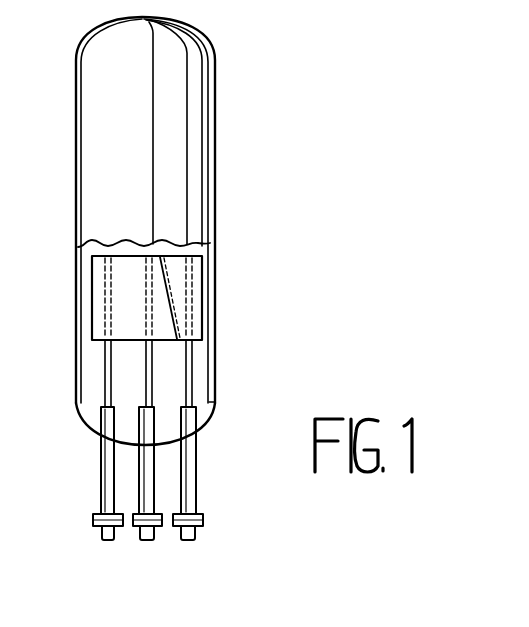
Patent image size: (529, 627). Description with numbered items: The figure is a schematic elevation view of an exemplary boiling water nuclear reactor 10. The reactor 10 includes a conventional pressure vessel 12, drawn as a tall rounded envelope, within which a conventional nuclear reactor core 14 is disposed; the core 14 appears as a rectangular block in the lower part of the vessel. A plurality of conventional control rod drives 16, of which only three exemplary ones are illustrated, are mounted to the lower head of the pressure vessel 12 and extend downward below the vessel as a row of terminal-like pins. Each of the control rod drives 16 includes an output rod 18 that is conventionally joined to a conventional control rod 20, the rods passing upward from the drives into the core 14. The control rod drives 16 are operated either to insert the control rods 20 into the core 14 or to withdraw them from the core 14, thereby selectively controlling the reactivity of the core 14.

The boiling water nuclear reactor 10 is at (216, 112).
The pressure vessel 12 is at (216, 340).
The nuclear reactor core 14 is at (100, 272).
The control rod drives 16 is at (197, 478).
The output rod 18 is at (107, 367).
The control rod 20 is at (100, 312).